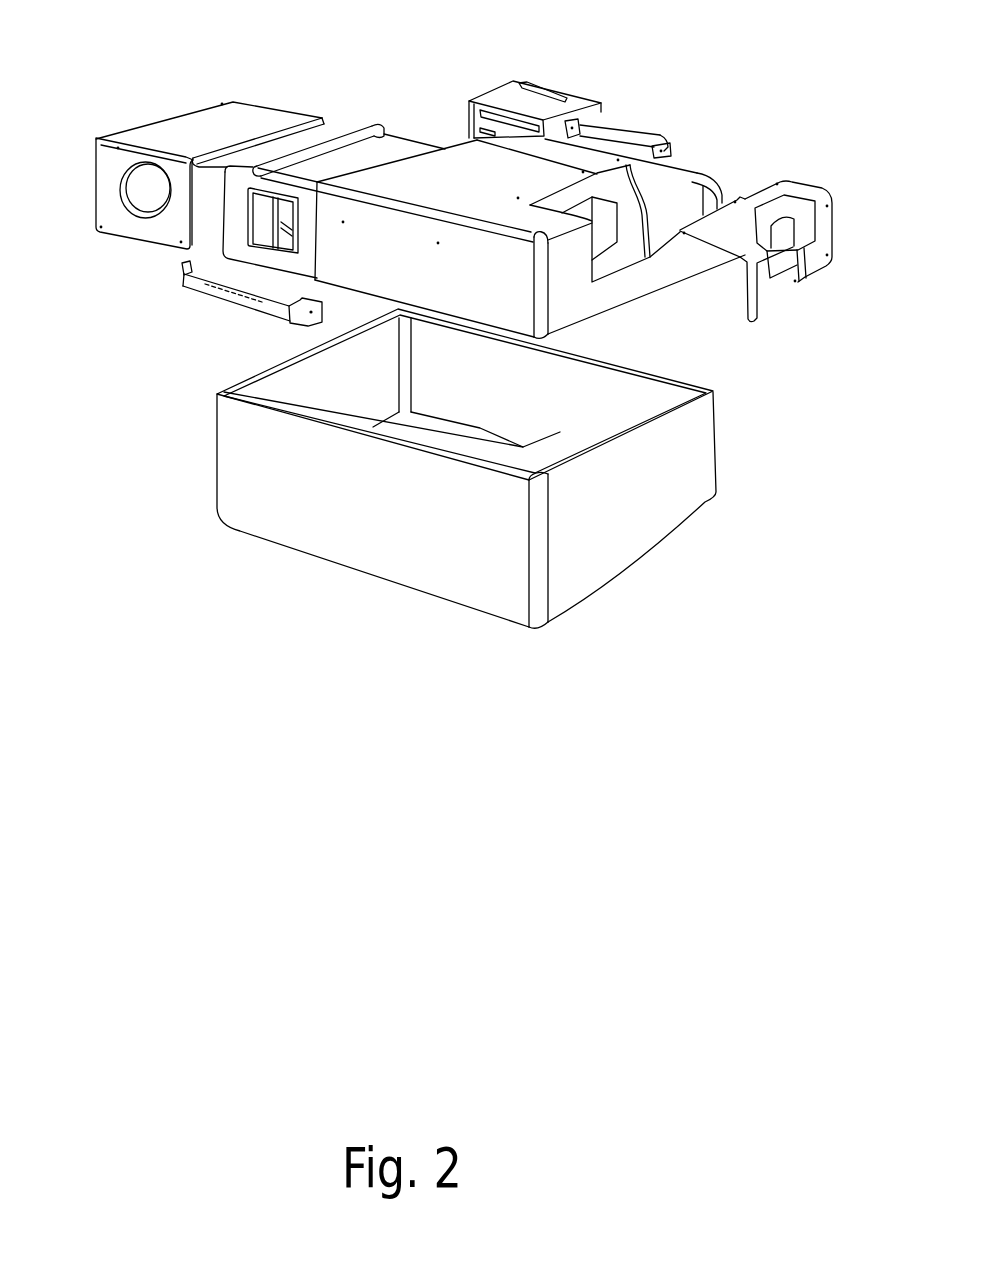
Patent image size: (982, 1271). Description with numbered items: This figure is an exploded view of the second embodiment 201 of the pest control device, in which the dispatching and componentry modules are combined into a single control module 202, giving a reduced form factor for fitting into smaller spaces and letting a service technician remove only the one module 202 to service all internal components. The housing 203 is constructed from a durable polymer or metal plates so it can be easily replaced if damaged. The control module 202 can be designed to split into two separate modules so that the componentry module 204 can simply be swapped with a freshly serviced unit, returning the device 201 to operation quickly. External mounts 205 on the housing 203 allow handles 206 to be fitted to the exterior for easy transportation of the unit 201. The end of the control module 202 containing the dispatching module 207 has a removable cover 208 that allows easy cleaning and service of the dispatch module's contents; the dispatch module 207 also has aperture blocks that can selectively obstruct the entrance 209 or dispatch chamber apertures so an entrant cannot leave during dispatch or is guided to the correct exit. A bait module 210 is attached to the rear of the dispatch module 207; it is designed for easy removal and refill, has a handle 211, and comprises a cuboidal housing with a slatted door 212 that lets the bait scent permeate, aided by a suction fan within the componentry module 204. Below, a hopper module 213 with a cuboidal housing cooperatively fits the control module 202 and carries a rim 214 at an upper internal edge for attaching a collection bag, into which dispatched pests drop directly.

The second embodiment 201 is at (434, 351).
The control module 202 is at (688, 167).
The housing 203 is at (651, 277).
The componentry module 204 is at (400, 282).
The external mounts 205 is at (352, 222).
The handles 206 is at (636, 118).
The dispatching module 207 is at (338, 138).
The removable cover 208 is at (200, 122).
The entrance 209 is at (120, 192).
The bait module 210 is at (503, 83).
The handle 211 is at (556, 84).
The slatted door 212 is at (467, 112).
The hopper module 213 is at (390, 568).
The rim 214 is at (713, 392).